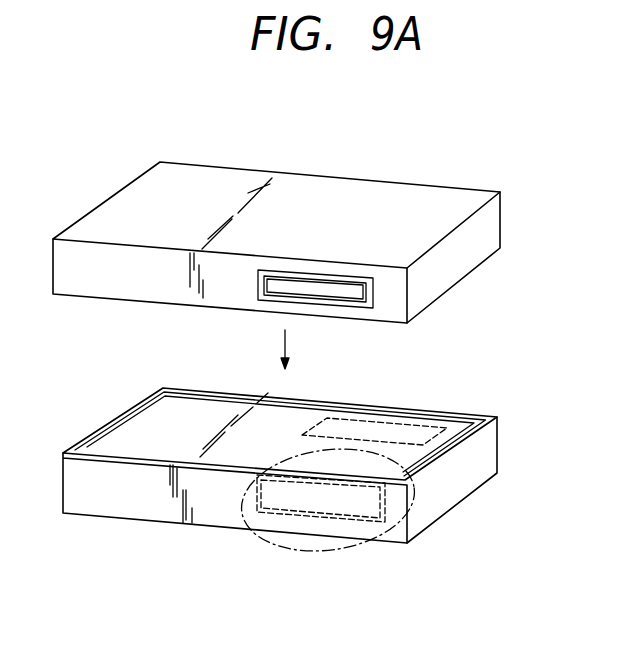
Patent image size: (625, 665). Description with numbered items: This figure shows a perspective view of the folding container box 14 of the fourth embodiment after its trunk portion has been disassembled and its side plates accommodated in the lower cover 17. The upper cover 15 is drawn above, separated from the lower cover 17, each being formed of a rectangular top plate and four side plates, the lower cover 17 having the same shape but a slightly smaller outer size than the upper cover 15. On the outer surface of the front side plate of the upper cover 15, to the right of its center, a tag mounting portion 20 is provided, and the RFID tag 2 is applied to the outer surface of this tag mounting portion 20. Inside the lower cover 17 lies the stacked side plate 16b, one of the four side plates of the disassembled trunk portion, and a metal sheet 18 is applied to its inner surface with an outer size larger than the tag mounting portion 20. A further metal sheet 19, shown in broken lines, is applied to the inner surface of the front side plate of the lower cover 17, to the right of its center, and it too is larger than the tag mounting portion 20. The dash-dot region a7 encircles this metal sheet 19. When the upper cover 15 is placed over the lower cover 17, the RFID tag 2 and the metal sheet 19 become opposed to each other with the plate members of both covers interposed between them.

The folding container box 14 is at (360, 168).
The upper cover 15 is at (467, 257).
The lower cover 17 is at (457, 488).
The RFID tag 2 is at (330, 295).
The tag mounting portion 20 is at (365, 310).
The side plate 16b is at (142, 430).
The metal sheet 18 is at (422, 423).
The metal sheet 19 is at (314, 532).
The enlarged region a7 is at (338, 553).